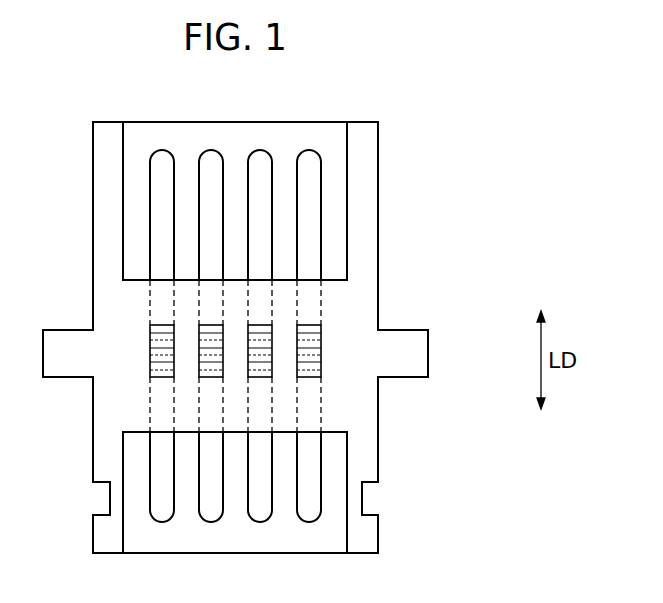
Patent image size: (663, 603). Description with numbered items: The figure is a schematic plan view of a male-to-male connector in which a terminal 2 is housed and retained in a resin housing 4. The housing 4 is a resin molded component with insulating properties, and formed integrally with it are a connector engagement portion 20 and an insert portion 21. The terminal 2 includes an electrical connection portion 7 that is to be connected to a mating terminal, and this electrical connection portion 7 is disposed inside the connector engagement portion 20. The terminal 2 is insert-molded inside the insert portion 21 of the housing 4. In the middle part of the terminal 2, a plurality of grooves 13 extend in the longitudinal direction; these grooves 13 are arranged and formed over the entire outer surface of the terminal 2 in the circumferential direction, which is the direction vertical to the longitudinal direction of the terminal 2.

The terminal 2 is at (313, 468).
The housing 4 is at (383, 357).
The electrical connection portion 7 is at (310, 160).
The grooves 13 is at (322, 340).
The connector engagement portion 20 is at (360, 198).
The insert portion 21 is at (330, 353).